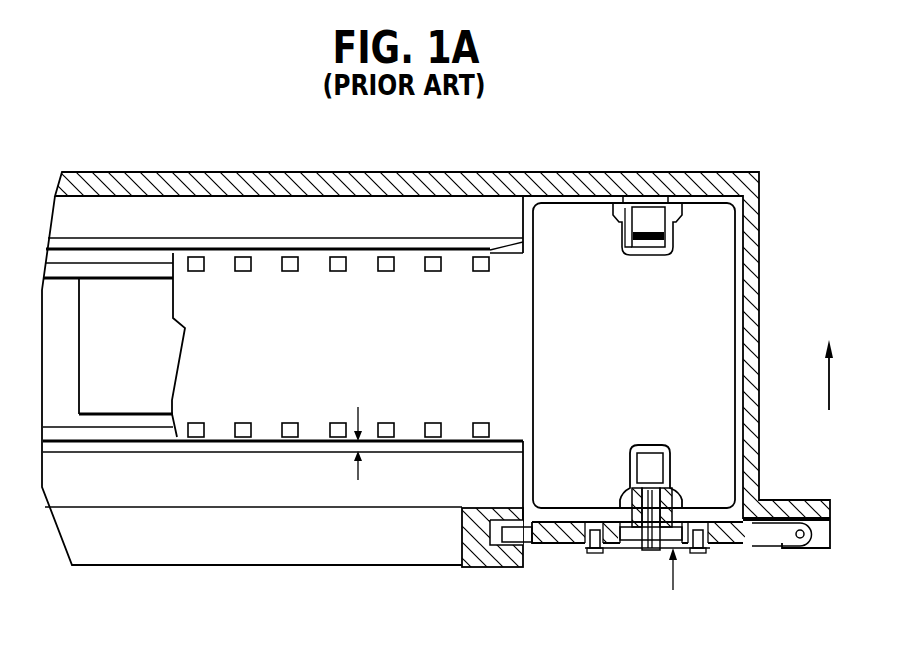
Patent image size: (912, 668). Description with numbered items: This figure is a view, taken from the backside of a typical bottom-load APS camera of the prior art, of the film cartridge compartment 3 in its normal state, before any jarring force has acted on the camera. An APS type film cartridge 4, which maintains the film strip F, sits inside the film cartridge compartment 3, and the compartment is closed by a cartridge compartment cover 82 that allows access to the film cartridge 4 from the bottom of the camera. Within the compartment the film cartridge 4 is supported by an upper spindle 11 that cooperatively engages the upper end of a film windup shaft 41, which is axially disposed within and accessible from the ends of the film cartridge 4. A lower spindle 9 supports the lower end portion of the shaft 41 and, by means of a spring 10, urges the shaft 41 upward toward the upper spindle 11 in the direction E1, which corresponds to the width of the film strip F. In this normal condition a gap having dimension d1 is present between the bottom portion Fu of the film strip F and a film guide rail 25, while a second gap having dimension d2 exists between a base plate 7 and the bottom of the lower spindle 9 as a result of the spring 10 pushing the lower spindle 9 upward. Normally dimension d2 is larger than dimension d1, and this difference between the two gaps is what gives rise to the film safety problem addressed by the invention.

The film cartridge compartment 3 is at (740, 217).
The film cartridge 4 is at (708, 316).
The base plate 7 is at (622, 548).
The lower spindle 9 is at (668, 497).
The spring 10 is at (640, 548).
The upper spindle 11 is at (648, 220).
The film guide rail 25 is at (130, 257).
The film windup shaft 41 is at (668, 222).
The cartridge compartment cover 82 is at (763, 548).
The film strip F is at (310, 283).
The bottom portion of film strip Fu is at (310, 428).
The gap dimension between film strip bottom and guide rail d1 is at (368, 434).
The gap dimension between base plate and lower spindle d2 is at (687, 569).
The direction of film strip width E1 is at (845, 375).